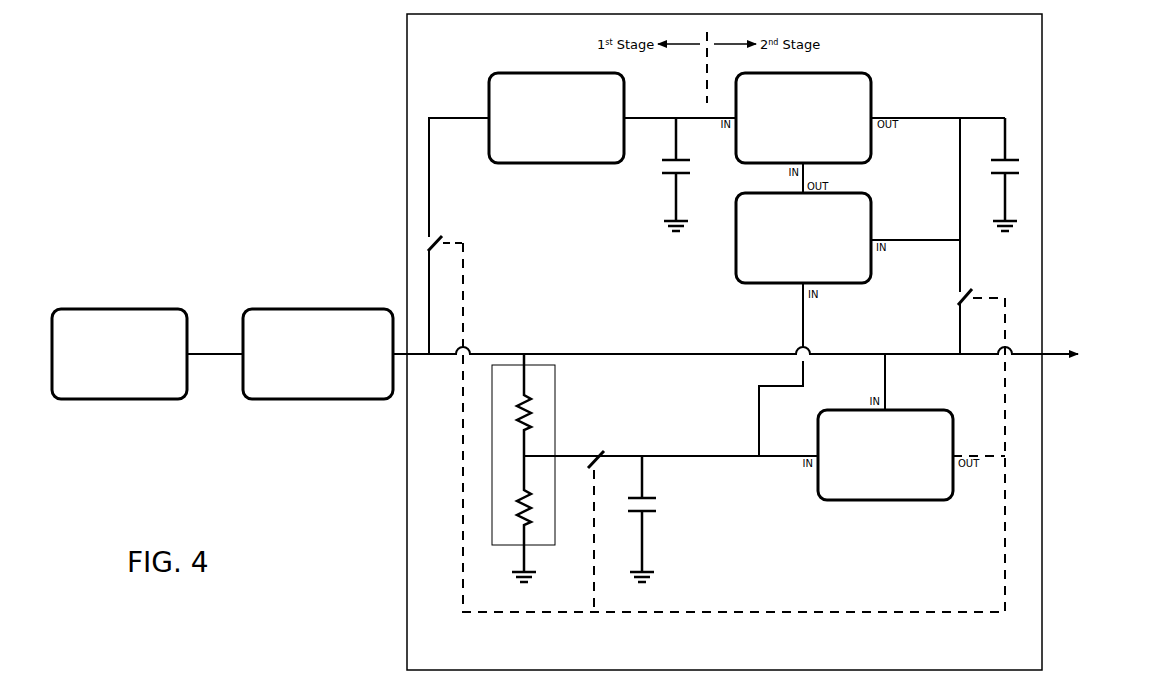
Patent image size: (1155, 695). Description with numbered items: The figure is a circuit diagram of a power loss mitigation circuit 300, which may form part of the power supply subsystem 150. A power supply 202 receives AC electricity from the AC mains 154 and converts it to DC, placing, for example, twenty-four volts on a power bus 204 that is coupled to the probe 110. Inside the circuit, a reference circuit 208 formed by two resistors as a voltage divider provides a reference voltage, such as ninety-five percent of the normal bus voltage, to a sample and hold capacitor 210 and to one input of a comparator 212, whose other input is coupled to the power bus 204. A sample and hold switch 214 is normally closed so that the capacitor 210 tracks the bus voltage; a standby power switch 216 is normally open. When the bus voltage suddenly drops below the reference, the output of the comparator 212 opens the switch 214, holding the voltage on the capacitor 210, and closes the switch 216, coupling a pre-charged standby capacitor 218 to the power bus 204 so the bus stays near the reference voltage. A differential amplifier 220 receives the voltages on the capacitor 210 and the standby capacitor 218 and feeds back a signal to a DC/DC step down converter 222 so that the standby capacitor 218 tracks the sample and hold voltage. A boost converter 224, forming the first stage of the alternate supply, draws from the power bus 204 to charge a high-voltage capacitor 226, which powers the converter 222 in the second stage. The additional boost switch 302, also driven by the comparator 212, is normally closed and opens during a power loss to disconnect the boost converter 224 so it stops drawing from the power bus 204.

The power supply subsystem 150 is at (328, 158).
The AC mains 154 is at (119, 354).
The power supply 202 is at (318, 354).
The power bus 204 is at (587, 352).
The reference circuit 208 is at (556, 385).
The sample and hold capacitor 210 is at (652, 493).
The comparator 212 is at (885, 455).
The sample and hold switch 214 is at (592, 452).
The standby power switch 216 is at (957, 295).
The standby capacitor 218 is at (1010, 158).
The differential amplifier 220 is at (803, 238).
The DC/DC step down converter 222 is at (803, 118).
The boost converter 224 is at (556, 118).
The high-voltage capacitor 226 is at (689, 177).
The power loss mitigation circuit 300 is at (724, 342).
The boost switch 302 is at (436, 238).
The probe 110 is at (1118, 358).